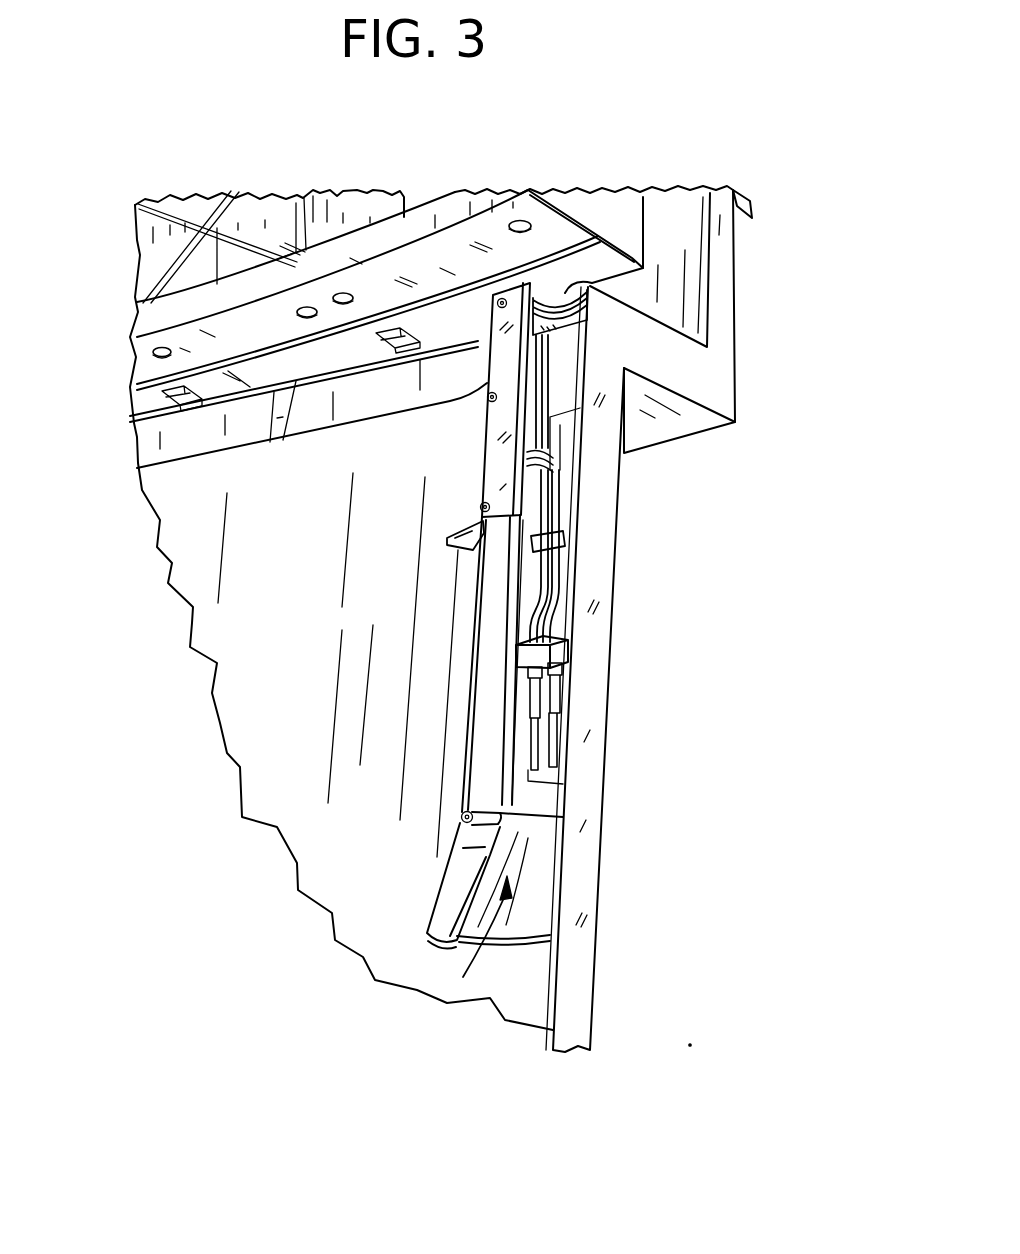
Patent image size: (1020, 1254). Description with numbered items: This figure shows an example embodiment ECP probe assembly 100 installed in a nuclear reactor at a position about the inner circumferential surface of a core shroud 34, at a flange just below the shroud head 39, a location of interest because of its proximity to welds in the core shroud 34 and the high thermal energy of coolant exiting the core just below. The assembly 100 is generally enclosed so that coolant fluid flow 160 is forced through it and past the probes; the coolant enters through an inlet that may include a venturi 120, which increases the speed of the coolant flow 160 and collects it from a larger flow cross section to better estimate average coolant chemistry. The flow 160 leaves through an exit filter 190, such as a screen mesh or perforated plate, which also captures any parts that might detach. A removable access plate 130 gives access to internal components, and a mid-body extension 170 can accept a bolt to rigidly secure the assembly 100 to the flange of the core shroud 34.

The core shroud 34 is at (245, 712).
The shroud head 39 is at (202, 345).
The exit filter 190 is at (650, 281).
The access plate 130 is at (500, 434).
The mid-body extension 170 is at (462, 533).
The ECP probe assembly 100 is at (568, 660).
The venturi 120 is at (453, 889).
The coolant fluid flow 160 is at (478, 975).